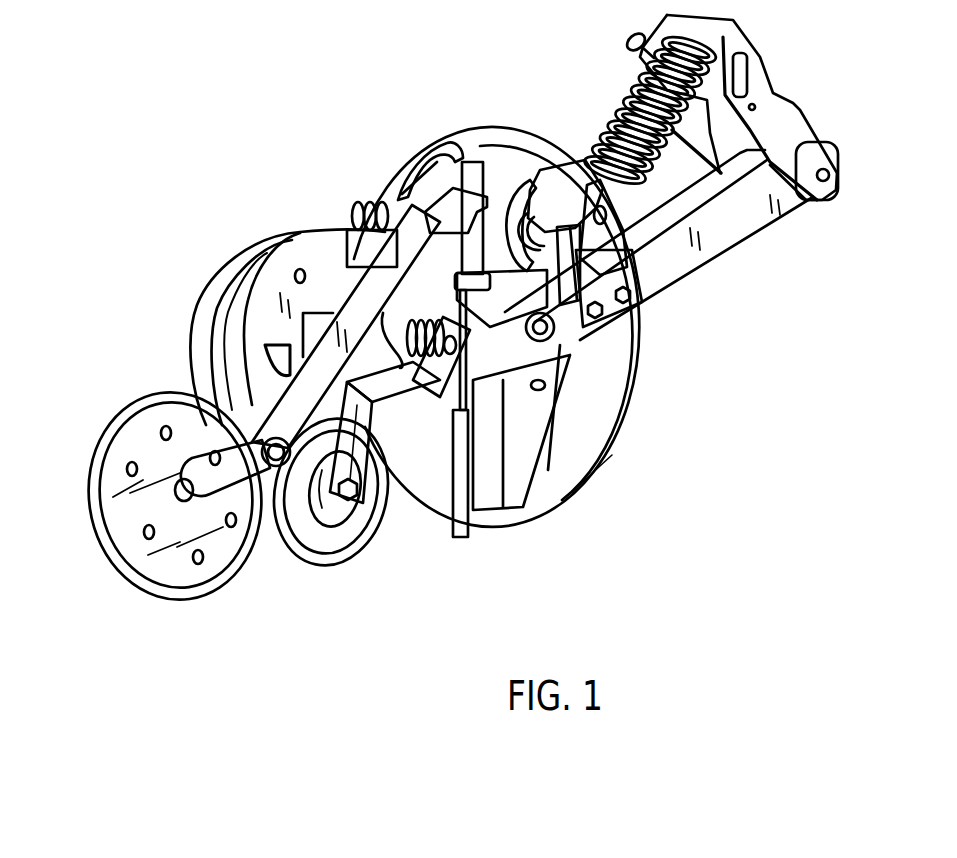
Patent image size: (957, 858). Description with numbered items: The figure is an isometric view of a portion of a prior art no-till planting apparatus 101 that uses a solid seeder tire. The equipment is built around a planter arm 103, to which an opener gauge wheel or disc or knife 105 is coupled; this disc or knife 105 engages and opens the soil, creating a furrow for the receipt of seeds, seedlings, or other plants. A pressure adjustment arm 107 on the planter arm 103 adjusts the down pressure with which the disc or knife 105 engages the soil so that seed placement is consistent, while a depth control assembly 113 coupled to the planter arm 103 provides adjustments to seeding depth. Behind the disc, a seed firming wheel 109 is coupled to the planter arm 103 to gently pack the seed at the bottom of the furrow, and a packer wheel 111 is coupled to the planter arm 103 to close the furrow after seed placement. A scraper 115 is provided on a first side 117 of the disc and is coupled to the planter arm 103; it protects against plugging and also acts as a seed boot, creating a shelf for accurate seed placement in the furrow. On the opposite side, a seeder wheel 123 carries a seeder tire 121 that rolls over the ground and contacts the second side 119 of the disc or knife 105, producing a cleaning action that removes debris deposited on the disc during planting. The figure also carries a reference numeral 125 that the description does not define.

The no-till planting apparatus 101 is at (293, 100).
The planter arm 103 is at (743, 230).
The opener gauge wheel or disc or knife 105 is at (657, 345).
The pressure adjustment arm 107 is at (637, 107).
The seed firming wheel 109 is at (325, 582).
The packer wheel 111 is at (192, 470).
The depth control assembly 113 is at (430, 177).
The scraper 115 is at (535, 480).
The first side of the disc 117 is at (597, 452).
The second side of the disc 119 is at (408, 520).
The seeder tire 121 is at (226, 272).
The seeder wheel 123 is at (272, 318).
The disc bearing 125 is at (246, 344).